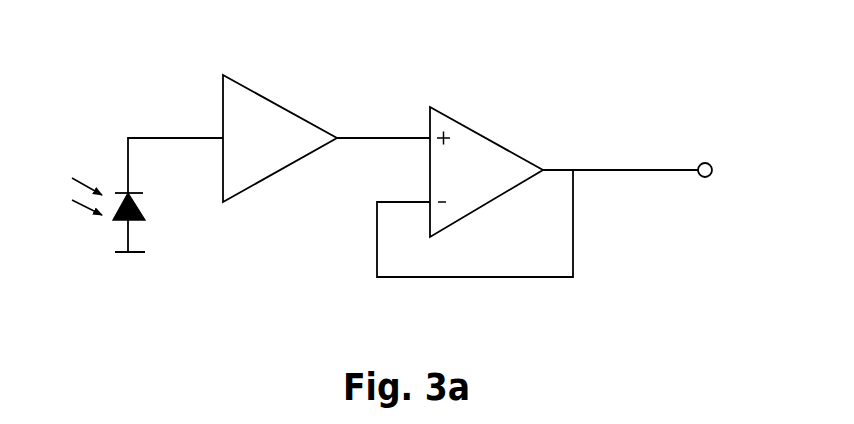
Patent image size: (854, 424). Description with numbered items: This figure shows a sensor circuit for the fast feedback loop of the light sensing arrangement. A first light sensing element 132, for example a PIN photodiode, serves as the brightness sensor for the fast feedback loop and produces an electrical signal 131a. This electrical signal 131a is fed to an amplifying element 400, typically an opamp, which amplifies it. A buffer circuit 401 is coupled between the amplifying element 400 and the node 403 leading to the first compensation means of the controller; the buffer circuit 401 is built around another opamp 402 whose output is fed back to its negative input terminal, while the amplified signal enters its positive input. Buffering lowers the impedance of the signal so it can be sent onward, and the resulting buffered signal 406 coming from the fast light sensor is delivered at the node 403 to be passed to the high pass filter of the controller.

The electrical signal 131a is at (197, 137).
The first light sensing element 132 is at (132, 215).
The amplifying element 400 is at (280, 148).
The buffer circuit 401 is at (475, 170).
The opamp 402 is at (501, 185).
The node 403 is at (711, 156).
The signal 406 is at (608, 170).